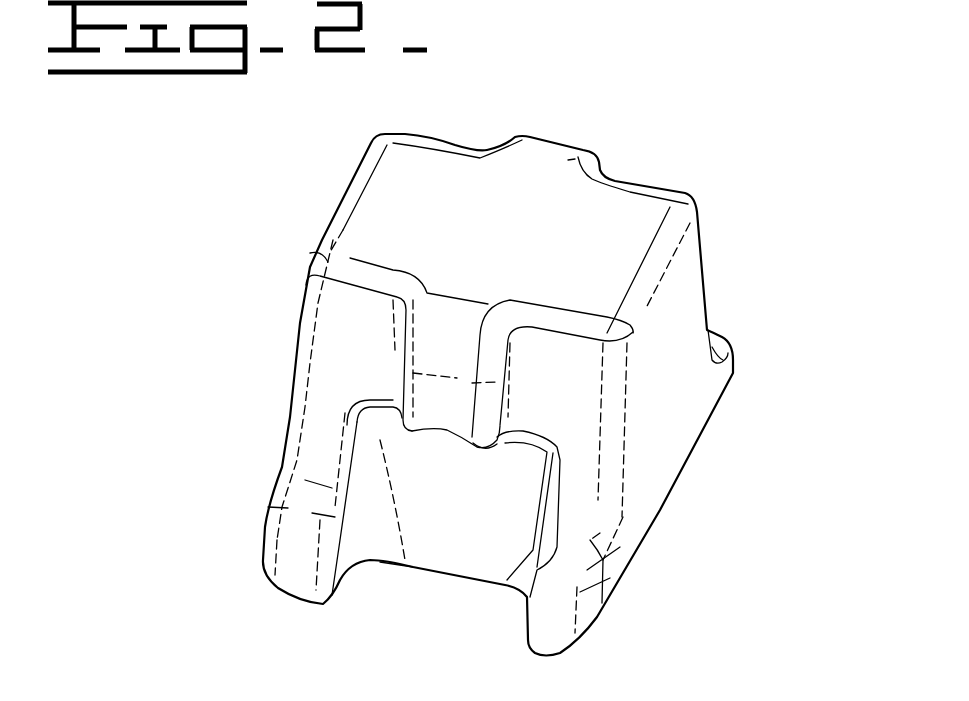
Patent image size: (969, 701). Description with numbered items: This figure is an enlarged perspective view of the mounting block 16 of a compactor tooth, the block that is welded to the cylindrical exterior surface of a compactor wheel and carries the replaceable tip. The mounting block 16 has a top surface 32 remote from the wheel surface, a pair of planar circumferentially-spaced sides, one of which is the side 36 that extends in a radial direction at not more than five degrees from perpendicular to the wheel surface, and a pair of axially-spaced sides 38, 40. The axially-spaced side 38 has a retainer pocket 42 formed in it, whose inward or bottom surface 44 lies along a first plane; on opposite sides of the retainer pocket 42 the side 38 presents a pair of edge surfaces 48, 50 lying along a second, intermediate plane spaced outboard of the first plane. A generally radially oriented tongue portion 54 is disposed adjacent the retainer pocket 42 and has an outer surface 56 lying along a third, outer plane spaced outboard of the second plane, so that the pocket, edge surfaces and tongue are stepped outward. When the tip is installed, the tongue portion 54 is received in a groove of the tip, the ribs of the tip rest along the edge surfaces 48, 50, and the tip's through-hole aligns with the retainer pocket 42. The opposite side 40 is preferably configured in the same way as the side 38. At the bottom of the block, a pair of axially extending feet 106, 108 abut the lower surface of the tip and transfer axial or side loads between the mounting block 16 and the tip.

The mounting block 16 is at (632, 128).
The top surface 32 is at (627, 223).
The circumferentially-spaced side 36 is at (685, 282).
The axially-spaced side 38 is at (322, 362).
The axially-spaced side 40 is at (448, 142).
The retainer pocket 42 is at (435, 547).
The bottom surface 44 is at (469, 511).
The edge surface 48 is at (365, 344).
The edge surface 50 is at (565, 394).
The tongue portion 54 is at (435, 385).
The outer surface 56 is at (463, 419).
The axially extending foot 106 is at (293, 562).
The axially extending foot 108 is at (553, 630).